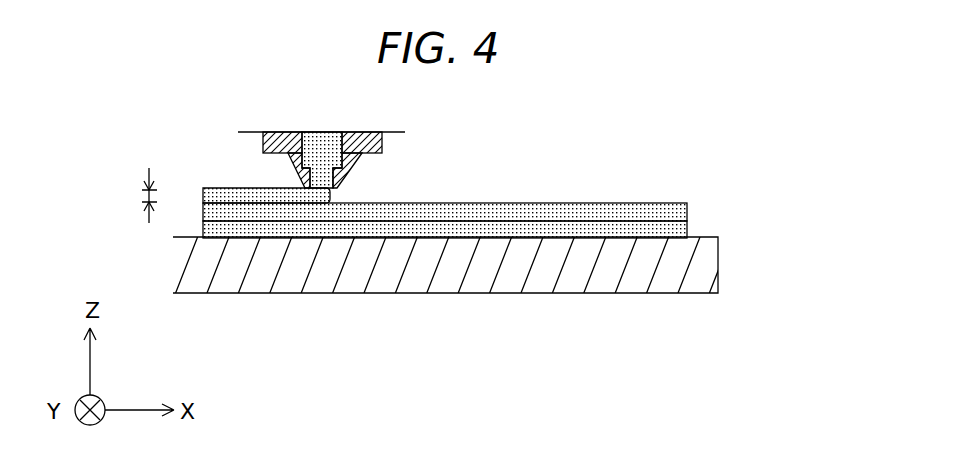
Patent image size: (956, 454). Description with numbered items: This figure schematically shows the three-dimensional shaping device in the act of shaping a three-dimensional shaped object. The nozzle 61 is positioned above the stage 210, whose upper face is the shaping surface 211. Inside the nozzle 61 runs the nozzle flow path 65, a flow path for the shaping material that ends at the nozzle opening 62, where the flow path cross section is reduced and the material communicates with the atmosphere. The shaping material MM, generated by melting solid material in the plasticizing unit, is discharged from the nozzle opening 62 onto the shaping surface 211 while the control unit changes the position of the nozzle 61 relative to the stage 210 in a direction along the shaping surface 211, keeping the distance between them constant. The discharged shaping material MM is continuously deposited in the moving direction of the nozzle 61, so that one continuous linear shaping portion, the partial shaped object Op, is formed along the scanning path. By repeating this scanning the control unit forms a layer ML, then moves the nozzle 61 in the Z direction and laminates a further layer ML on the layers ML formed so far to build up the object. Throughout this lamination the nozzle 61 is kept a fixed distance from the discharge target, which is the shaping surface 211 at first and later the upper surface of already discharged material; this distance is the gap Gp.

The nozzle 61 is at (331, 143).
The nozzle opening 62 is at (330, 197).
The nozzle flow path 65 is at (383, 141).
The stage 210 is at (739, 231).
The shaping surface 211 is at (225, 231).
The shaping material MM is at (336, 132).
The layer ML is at (497, 212).
The partial shaped object Op is at (203, 188).
The gap Gp is at (142, 193).